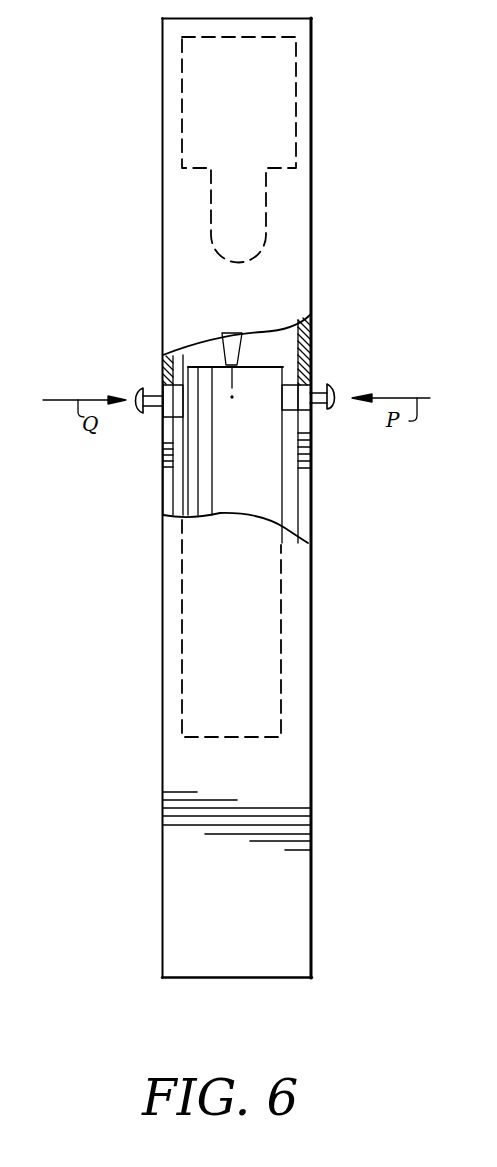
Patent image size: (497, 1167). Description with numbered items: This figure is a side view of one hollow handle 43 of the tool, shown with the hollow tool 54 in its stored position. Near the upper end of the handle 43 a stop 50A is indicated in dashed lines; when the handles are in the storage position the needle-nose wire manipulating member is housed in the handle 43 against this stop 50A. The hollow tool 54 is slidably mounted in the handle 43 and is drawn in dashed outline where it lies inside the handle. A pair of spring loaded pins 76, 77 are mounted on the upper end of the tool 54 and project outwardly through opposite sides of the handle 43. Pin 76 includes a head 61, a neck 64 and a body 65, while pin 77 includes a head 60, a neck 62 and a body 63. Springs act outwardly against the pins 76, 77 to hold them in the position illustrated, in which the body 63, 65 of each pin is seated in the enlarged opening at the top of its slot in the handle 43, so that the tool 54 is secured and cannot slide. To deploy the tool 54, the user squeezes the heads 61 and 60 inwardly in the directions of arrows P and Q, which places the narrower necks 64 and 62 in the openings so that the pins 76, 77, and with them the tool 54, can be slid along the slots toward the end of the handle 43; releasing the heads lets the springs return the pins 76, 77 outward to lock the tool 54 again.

The hollow handle 43 is at (322, 745).
The stop 50A is at (268, 223).
The hollow tool 54 is at (234, 492).
The head 60 is at (140, 389).
The head 61 is at (337, 383).
The neck 62 is at (150, 395).
The body 63 is at (162, 420).
The neck 64 is at (321, 385).
The body 65 is at (312, 405).
The spring loaded pin 76 is at (380, 379).
The spring loaded pin 77 is at (118, 420).